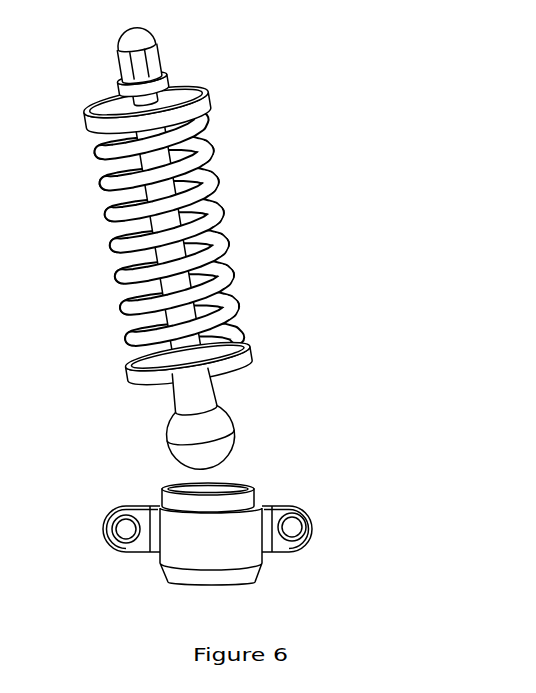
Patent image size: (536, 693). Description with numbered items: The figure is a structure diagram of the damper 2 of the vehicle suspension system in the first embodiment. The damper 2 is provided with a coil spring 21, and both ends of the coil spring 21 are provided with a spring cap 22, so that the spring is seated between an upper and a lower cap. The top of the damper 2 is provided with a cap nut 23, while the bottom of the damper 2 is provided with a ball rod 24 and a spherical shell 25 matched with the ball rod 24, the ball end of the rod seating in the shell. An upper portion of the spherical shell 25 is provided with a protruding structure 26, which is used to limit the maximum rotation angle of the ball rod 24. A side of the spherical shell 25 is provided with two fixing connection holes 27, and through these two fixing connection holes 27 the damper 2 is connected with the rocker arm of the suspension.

The damper 2 is at (252, 223).
The coil spring 21 is at (213, 150).
The spring cap 22 is at (205, 92).
The cap nut 23 is at (155, 42).
The ball rod 24 is at (217, 423).
The spherical shell 25 is at (218, 542).
The protruding structure 26 is at (163, 492).
The fixing connection hole 27 is at (295, 523).